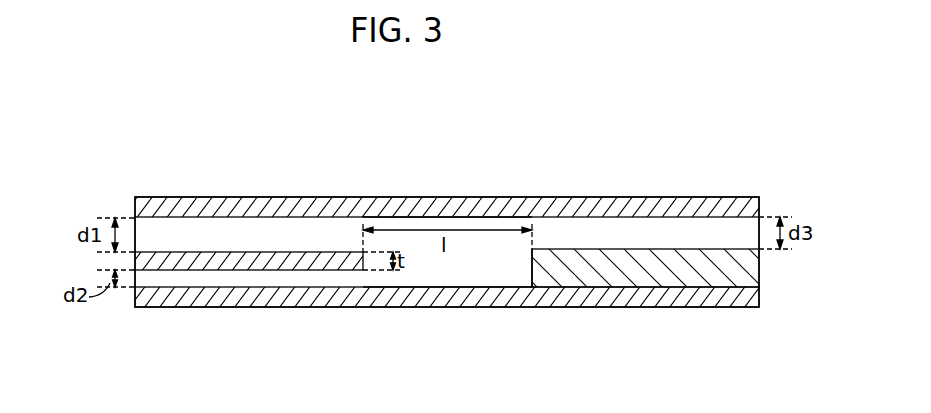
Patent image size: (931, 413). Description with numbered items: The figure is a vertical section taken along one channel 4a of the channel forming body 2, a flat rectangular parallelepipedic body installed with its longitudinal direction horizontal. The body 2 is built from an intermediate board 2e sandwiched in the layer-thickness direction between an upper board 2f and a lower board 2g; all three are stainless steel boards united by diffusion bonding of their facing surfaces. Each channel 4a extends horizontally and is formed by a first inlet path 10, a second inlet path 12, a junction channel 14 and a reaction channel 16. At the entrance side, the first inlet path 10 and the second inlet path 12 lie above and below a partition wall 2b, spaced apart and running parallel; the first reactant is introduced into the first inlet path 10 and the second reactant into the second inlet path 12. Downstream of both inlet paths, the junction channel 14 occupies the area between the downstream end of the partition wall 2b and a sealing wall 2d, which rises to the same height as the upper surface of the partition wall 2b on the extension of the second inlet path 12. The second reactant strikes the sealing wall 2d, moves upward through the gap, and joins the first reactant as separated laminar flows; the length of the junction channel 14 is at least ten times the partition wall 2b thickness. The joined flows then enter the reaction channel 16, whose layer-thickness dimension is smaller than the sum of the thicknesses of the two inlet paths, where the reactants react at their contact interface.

The channel forming body 2 is at (264, 165).
The partition wall 2b is at (142, 262).
The sealing wall 2d is at (531, 275).
The intermediate board 2e is at (759, 269).
The upper board 2f is at (584, 197).
The lower board 2g is at (583, 307).
The channel 4a is at (468, 210).
The first inlet path 10 is at (184, 233).
The second inlet path 12 is at (178, 281).
The junction channel 14 is at (435, 276).
The reaction channel 16 is at (689, 234).